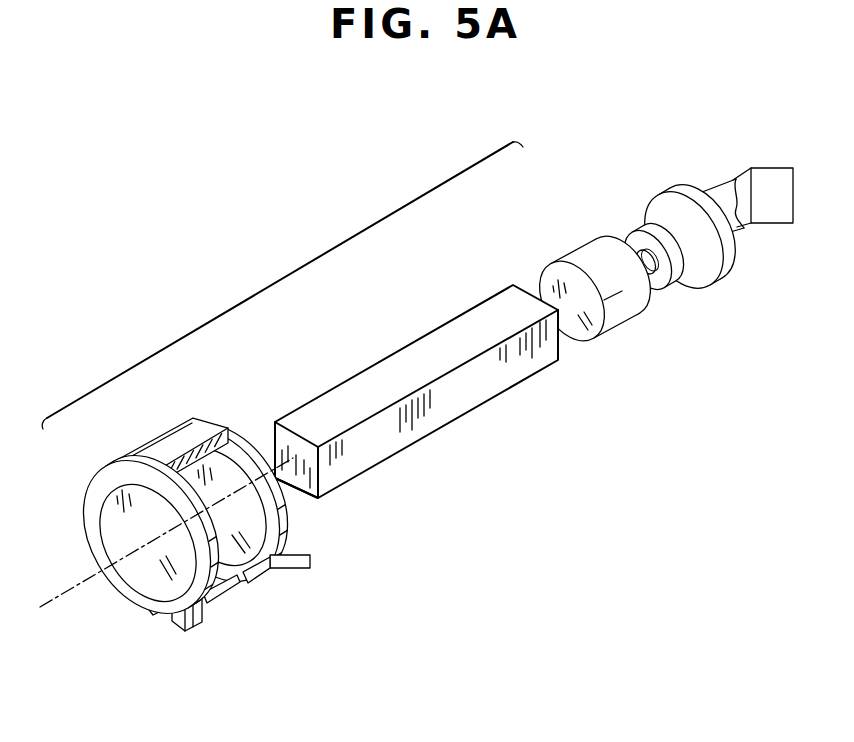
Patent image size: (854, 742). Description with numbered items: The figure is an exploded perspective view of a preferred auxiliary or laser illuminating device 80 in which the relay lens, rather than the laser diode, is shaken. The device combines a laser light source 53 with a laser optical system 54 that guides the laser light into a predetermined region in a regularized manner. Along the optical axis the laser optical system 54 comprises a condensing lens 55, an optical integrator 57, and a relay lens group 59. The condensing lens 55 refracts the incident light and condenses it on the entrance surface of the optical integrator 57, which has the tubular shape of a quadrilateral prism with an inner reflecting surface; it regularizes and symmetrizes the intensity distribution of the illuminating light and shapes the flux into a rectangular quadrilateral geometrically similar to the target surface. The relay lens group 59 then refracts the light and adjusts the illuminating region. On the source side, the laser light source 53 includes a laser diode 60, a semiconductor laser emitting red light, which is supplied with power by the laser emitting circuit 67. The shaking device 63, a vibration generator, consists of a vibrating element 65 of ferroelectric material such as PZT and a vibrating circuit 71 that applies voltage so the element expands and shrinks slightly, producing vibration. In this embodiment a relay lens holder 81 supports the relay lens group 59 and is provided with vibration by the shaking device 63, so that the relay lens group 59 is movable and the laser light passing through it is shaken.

The laser light source 53 is at (670, 310).
The laser optical system 54 is at (268, 286).
The condensing lens 55 is at (577, 257).
The optical integrator 57 is at (404, 362).
The relay lens group 59 is at (108, 497).
The laser diode 60 is at (707, 273).
The shaking device 63 is at (186, 547).
The vibrating element 65 is at (195, 627).
The laser emitting circuit 67 is at (770, 222).
The vibrating circuit 71 is at (290, 570).
The laser illuminating device 80 is at (491, 478).
The relay lens holder 81 is at (217, 420).